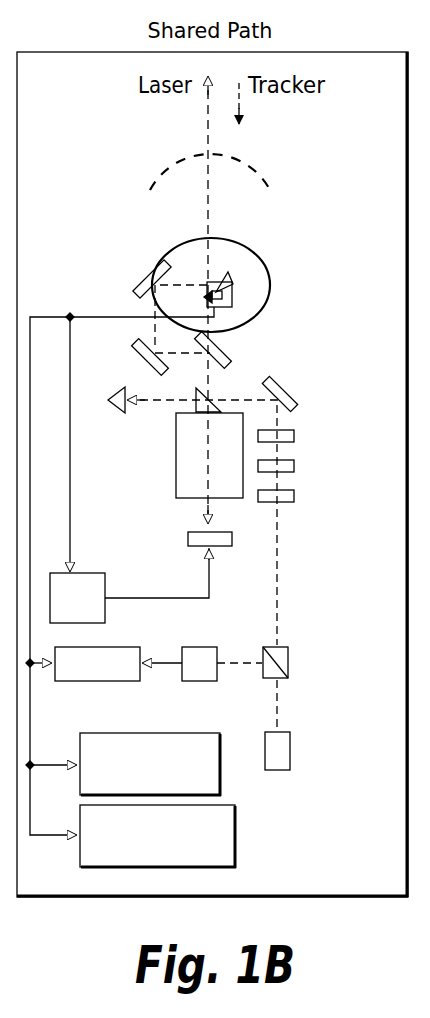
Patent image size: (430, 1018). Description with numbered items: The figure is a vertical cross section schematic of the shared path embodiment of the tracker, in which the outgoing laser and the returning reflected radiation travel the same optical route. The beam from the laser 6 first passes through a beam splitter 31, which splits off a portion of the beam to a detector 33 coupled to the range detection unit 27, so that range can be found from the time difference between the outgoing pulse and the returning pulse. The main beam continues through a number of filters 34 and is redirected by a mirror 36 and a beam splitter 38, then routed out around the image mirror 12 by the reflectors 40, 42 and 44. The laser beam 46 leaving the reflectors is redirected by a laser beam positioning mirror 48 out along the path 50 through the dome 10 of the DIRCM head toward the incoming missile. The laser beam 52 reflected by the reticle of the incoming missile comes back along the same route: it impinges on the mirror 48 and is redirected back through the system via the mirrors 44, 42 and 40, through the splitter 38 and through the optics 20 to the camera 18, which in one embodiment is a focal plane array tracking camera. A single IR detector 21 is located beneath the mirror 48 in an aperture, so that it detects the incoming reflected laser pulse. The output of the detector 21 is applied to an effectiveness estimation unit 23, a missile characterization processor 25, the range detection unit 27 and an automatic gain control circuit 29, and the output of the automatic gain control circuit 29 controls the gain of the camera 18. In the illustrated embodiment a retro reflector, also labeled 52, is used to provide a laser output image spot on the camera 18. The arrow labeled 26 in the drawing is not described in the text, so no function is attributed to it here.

The laser 6 is at (291, 752).
The dome 10 is at (264, 176).
The image mirror 12 is at (284, 294).
The camera 18 is at (192, 529).
The optics 20 is at (174, 448).
The single IR detector 21 is at (228, 274).
The effectiveness estimation unit 23 is at (125, 733).
The missile characterization processor 25 is at (237, 835).
The reflected return beam 26 is at (256, 680).
The range detection unit 27 is at (100, 682).
The automatic gain control circuit 29 is at (106, 588).
The beam splitter 31 is at (292, 663).
The detector 33 is at (208, 645).
The filters 34 is at (303, 430).
The mirror 36 is at (295, 390).
The beam splitter 38 is at (196, 400).
The reflector 40 is at (228, 348).
The reflector 42 is at (138, 355).
The reflector 44 is at (140, 275).
The laser beam 46 is at (179, 285).
The laser beam positioning mirror 48 is at (233, 291).
The path 50 is at (207, 187).
The laser beam reflected by the reticle 52 is at (241, 100).